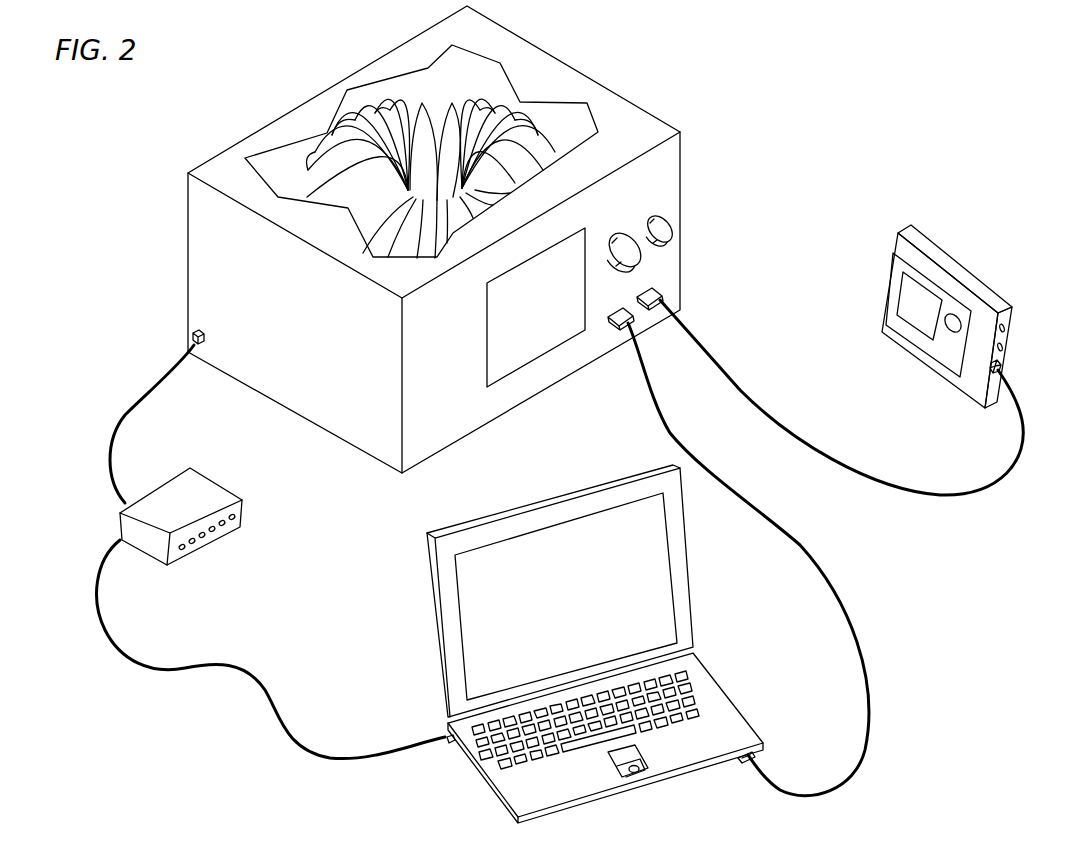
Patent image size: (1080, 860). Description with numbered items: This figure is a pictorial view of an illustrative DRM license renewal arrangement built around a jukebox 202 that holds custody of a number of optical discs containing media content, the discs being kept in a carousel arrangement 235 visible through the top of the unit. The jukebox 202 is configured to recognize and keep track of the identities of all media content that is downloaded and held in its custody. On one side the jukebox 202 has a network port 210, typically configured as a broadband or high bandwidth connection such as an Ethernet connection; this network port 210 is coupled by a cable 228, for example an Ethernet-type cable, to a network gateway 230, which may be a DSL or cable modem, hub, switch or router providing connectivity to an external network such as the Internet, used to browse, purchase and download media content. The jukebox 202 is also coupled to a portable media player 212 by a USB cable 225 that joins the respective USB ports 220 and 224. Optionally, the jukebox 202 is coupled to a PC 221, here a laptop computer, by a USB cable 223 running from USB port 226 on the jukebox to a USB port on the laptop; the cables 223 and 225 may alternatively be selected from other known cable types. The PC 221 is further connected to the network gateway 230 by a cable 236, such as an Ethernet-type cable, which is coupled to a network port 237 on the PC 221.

The jukebox 202 is at (437, 455).
The carousel arrangement 235 is at (454, 85).
The USB port 220 is at (658, 289).
The USB port 226 is at (607, 323).
The USB cable 225 is at (903, 487).
The USB cable 223 is at (838, 587).
The portable media player 212 is at (957, 397).
The USB port 224 is at (1002, 364).
The network port 210 is at (192, 337).
The cable 228 is at (132, 402).
The network gateway 230 is at (242, 507).
The cable 236 is at (268, 706).
The PC 221 is at (497, 798).
The network port 237 is at (448, 741).